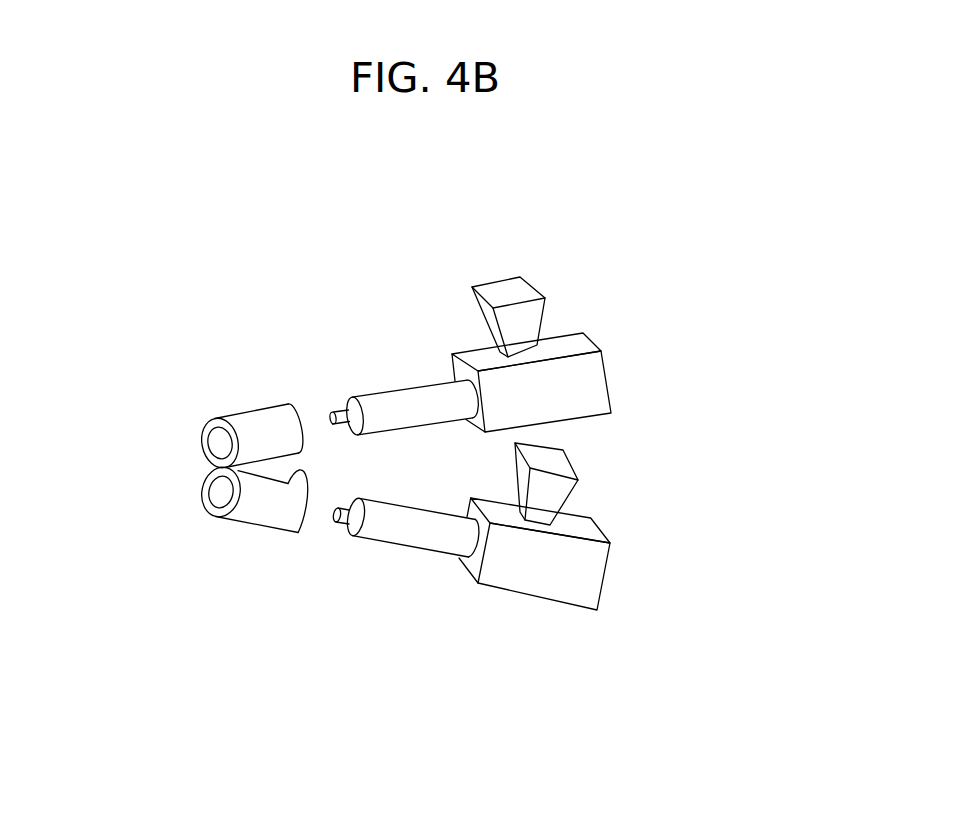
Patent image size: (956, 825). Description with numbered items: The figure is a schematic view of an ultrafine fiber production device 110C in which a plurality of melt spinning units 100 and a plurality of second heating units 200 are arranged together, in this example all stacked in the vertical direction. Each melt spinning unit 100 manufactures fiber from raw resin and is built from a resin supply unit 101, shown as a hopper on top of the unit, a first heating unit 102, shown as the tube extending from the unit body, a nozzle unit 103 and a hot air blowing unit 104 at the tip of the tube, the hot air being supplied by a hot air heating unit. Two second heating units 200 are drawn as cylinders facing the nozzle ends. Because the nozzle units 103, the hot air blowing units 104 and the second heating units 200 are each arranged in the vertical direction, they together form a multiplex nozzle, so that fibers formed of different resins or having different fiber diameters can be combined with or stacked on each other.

The ultrafine fiber production device 110C is at (287, 287).
The melt spinning unit 100 is at (647, 258).
The resin supply unit 101 is at (527, 318).
The first heating unit 102 is at (428, 405).
The nozzle unit 103 is at (332, 423).
The hot air blowing unit 104 is at (348, 520).
The second heating unit 200 is at (257, 493).